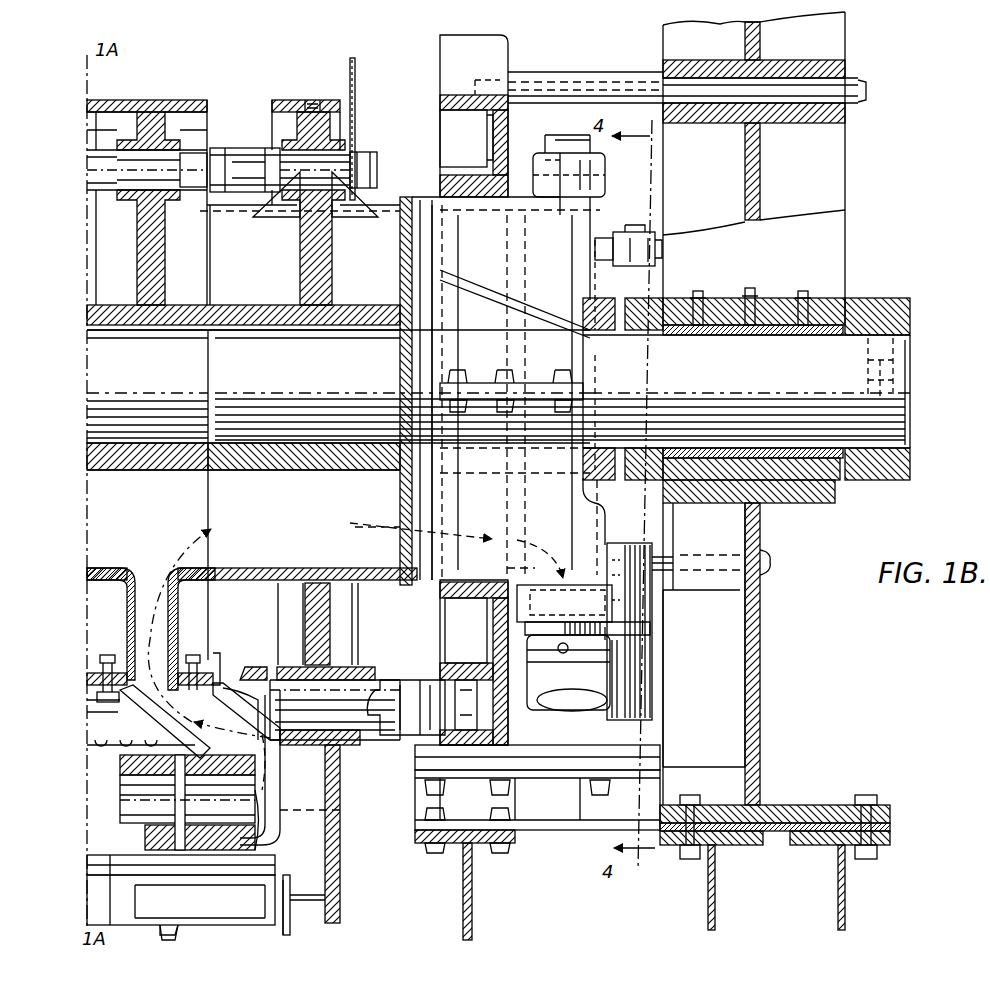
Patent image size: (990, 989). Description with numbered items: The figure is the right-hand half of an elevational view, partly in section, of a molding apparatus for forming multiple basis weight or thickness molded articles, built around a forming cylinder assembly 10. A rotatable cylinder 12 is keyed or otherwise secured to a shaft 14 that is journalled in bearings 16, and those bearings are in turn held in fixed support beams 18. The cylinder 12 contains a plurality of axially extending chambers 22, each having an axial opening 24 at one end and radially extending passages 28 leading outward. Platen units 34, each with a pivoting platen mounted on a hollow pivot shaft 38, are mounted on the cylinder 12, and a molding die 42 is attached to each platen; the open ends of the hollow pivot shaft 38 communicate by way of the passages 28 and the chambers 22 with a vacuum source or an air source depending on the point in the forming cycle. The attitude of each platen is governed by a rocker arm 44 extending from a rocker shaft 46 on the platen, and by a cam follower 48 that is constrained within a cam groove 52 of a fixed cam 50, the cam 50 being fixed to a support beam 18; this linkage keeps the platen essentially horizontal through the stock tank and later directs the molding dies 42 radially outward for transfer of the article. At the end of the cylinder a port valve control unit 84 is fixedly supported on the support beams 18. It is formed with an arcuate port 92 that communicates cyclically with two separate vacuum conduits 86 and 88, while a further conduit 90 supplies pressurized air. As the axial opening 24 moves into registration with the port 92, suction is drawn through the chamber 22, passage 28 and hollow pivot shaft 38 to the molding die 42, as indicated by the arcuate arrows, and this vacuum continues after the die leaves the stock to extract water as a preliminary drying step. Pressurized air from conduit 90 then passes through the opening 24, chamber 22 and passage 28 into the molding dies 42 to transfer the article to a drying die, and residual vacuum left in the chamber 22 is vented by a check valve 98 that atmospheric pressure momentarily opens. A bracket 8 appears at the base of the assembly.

The bracket 8 is at (265, 932).
The forming cylinder assembly 10 is at (237, 118).
The rotatable cylinder 12 is at (386, 205).
The shaft 14 is at (305, 388).
The bearings 16 is at (825, 338).
The fixed support beams 18 is at (683, 43).
The axially extending chambers 22 is at (310, 523).
The axial opening 24 is at (412, 505).
The radially extending passages 28 is at (145, 645).
The platen units 34 is at (182, 935).
The hollow pivot shaft 38 is at (230, 795).
The molding die 42 is at (232, 911).
The rocker arm 44 is at (395, 690).
The rocker shaft 46 is at (280, 700).
The cam follower 48 is at (440, 685).
The fixed cam 50 is at (452, 66).
The cam groove 52 is at (455, 120).
The port valve control unit 84 is at (580, 222).
The vacuum conduit 86 is at (575, 705).
The vacuum conduit 88 is at (650, 678).
The conduit 90 is at (563, 140).
The arcuate port 92 is at (428, 505).
The check valve 98 is at (630, 255).